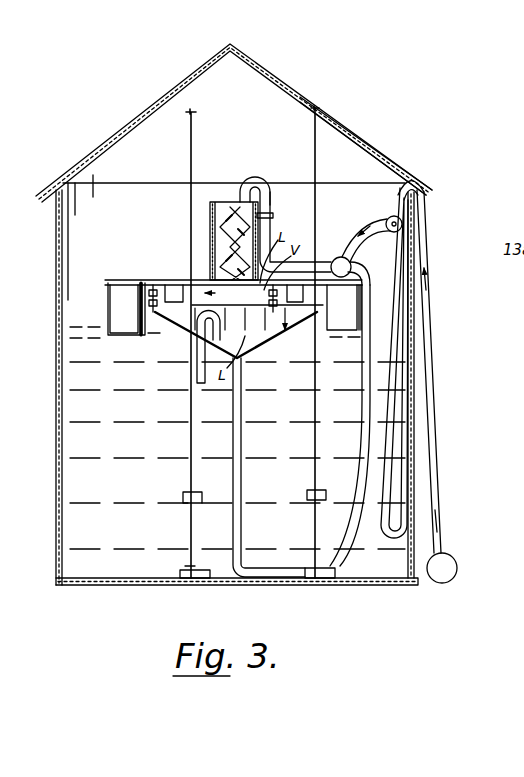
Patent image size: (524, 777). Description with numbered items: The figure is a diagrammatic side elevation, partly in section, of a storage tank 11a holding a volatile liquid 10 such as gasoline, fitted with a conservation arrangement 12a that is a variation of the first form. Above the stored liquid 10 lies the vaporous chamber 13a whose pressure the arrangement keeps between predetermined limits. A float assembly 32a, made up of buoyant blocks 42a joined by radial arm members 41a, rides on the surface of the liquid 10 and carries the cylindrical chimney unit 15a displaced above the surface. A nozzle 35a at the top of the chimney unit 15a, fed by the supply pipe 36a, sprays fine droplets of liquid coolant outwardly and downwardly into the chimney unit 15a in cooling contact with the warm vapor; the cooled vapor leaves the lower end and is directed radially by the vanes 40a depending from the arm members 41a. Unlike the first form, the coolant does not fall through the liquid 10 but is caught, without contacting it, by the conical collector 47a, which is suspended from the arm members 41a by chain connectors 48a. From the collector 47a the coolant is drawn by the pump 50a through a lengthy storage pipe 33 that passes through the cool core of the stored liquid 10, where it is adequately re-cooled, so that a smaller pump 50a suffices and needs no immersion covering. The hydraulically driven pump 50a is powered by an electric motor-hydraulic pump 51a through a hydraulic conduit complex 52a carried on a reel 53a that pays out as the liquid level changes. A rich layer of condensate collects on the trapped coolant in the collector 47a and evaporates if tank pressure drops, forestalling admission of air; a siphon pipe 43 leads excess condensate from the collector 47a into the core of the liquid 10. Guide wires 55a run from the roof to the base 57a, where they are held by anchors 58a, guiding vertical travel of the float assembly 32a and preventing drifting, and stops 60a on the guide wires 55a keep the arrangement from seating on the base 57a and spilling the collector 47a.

The volatile liquid 10 is at (65, 326).
The storage tank 11a is at (150, 108).
The conservation arrangement 12a is at (183, 341).
The vaporous chamber 13a is at (342, 158).
The chimney unit 15a is at (210, 228).
The float assembly 32a is at (106, 290).
The storage pipe 33 is at (243, 450).
The nozzle 35a is at (240, 198).
The supply pipe 36a is at (262, 184).
The vanes 40a is at (175, 288).
The radial arm members 41a is at (146, 288).
The buoyant blocks 42a is at (118, 292).
The siphon pipe 43 is at (196, 381).
The conical collector 47a is at (256, 342).
The chain connectors 48a is at (150, 335).
The pump 50a is at (339, 257).
The electric motor-hydraulic pump 51a is at (457, 563).
The hydraulic conduit complex 52a is at (402, 412).
The reel 53a is at (402, 224).
The guide wires 55a is at (322, 398).
The base 57a is at (362, 585).
The anchors 58a is at (336, 572).
The stops 60a is at (188, 492).